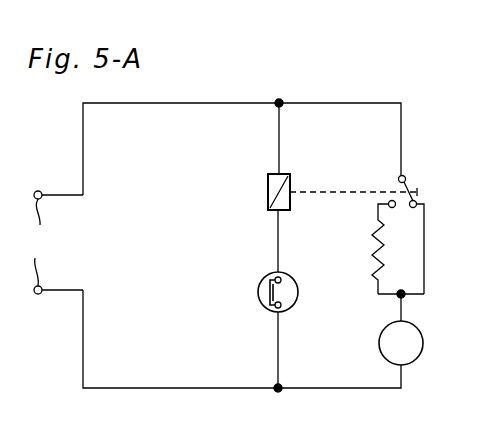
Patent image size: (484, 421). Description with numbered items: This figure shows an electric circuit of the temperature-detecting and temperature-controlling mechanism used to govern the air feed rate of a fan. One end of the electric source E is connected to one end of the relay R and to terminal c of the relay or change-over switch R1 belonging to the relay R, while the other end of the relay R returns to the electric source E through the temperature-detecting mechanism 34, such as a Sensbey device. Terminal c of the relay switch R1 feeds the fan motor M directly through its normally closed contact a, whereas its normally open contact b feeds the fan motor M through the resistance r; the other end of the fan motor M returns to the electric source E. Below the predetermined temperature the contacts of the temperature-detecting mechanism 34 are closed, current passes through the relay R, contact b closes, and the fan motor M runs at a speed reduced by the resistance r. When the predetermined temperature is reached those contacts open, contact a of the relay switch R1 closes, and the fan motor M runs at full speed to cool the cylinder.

The temperature-detecting mechanism 34 is at (299, 298).
The electric source E is at (56, 242).
The relay R is at (283, 180).
The relay switch R1 is at (406, 225).
The resistance r is at (369, 254).
The fan motor M is at (401, 343).